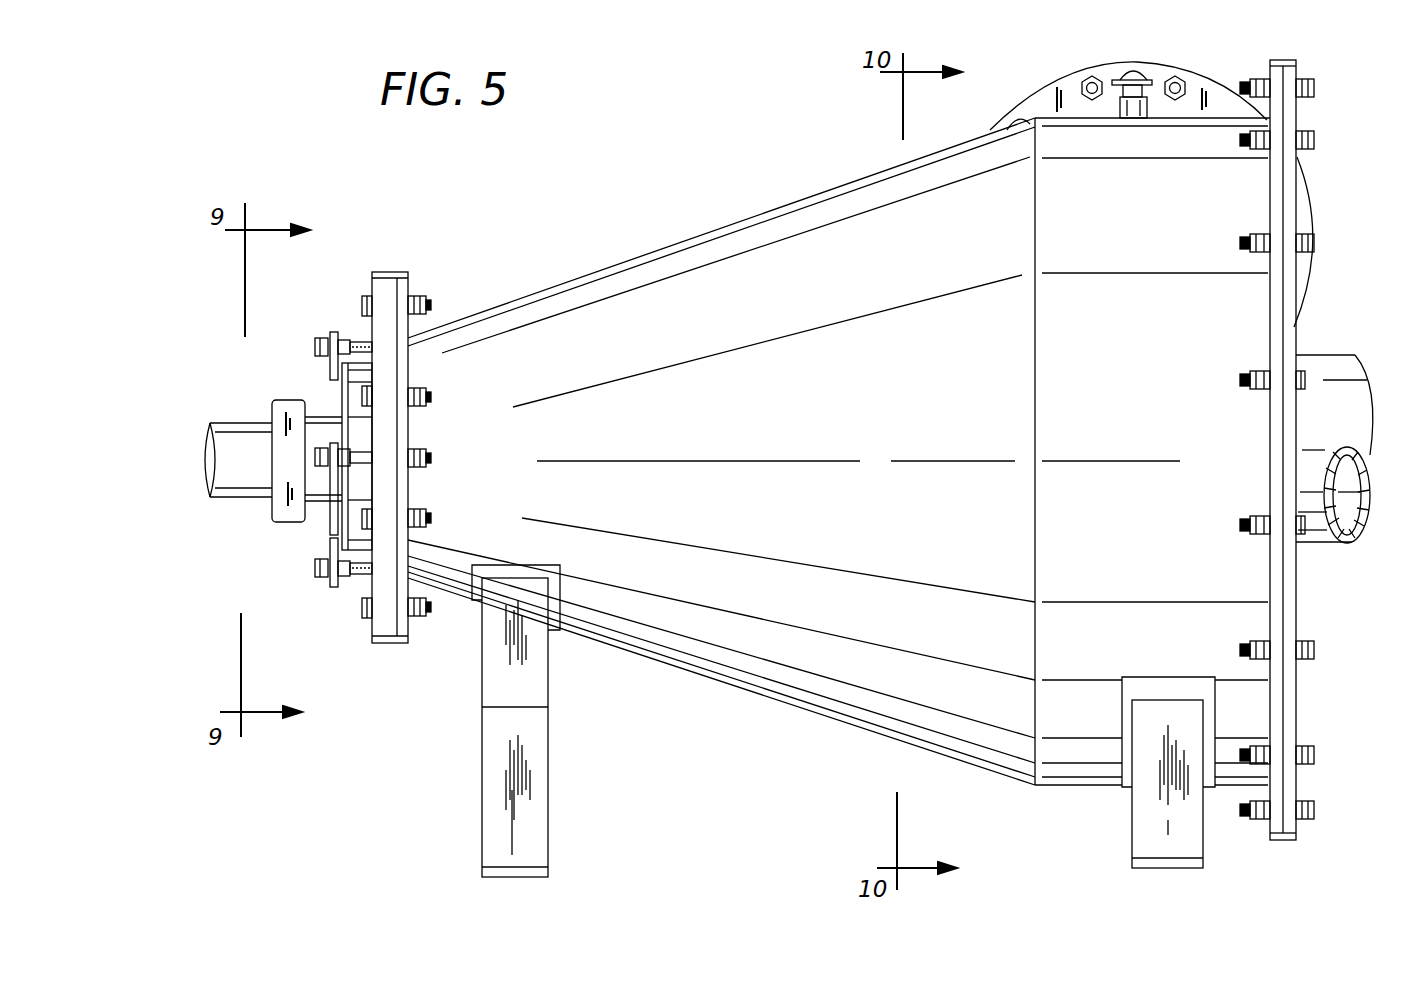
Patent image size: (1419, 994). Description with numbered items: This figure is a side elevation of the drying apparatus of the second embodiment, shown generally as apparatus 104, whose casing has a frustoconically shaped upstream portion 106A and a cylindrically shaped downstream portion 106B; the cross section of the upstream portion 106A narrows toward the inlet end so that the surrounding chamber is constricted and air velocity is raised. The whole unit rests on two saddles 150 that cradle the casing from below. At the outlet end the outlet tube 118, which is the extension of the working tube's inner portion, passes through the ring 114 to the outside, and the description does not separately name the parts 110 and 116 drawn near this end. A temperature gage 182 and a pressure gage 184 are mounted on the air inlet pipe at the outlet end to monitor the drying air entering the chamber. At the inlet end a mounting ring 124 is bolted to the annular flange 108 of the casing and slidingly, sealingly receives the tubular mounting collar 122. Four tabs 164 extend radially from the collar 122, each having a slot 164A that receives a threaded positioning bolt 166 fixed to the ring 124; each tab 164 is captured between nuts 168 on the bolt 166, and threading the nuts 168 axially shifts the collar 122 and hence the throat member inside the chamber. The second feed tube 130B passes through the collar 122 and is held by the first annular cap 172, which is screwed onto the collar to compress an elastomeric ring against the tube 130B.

The outlet assembly 104 is at (1328, 450).
The upstream portion 106A is at (712, 290).
The downstream portion 106B is at (1258, 205).
The annular flange 108 is at (407, 272).
The outlet flange 110 is at (1272, 690).
The ring 114 is at (1284, 726).
The bolts 116 is at (1306, 140).
The outlet tube 118 is at (1345, 362).
The mounting collar 122 is at (320, 398).
The mounting ring 124 is at (388, 272).
The second feed tube 130B is at (247, 425).
The saddles 150 is at (482, 700).
The tabs 164 is at (333, 335).
The slot 164A is at (345, 470).
The positioning bolts 166 is at (345, 338).
The nuts 168 is at (318, 345).
The first annular cap 172 is at (276, 520).
The temperature gage 182 is at (1147, 78).
The pressure gage 184 is at (1120, 68).